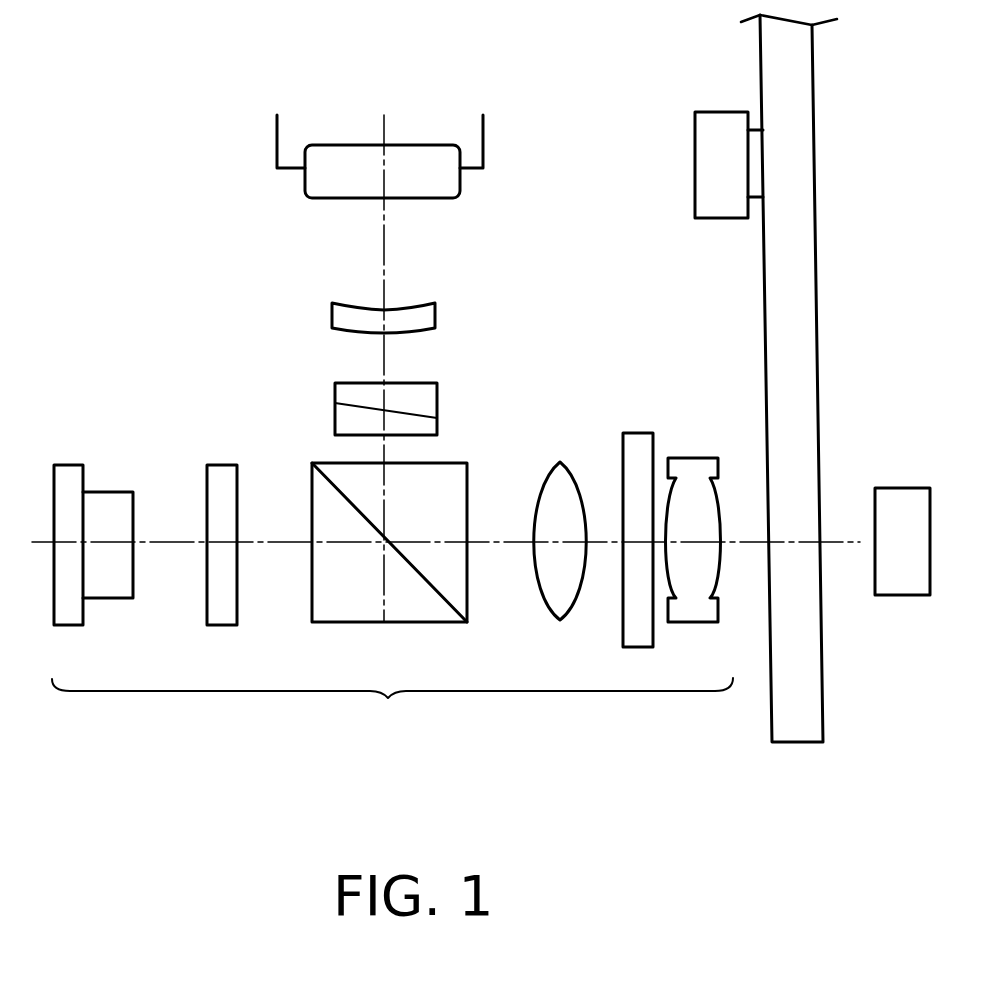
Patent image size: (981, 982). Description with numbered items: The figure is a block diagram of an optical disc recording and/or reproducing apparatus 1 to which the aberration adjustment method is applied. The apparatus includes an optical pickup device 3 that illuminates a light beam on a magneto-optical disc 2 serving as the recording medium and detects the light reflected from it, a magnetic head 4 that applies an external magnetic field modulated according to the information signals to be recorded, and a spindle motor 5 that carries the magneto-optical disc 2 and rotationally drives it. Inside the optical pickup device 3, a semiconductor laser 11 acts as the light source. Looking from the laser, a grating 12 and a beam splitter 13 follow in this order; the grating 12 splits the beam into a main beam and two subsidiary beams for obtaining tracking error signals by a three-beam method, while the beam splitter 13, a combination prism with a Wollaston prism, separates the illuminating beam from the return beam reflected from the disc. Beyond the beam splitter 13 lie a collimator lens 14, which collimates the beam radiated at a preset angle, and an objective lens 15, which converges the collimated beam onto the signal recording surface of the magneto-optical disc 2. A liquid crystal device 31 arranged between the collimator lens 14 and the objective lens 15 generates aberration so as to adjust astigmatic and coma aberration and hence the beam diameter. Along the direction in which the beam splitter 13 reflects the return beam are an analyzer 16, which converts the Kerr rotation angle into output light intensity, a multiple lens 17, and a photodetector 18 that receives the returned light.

The optical disc recording and/or reproducing apparatus 1 is at (80, 280).
The magneto-optical disc 2 is at (820, 318).
The optical pickup device 3 is at (392, 711).
The magnetic head 4 is at (903, 488).
The spindle motor 5 is at (722, 112).
The semiconductor laser 11 is at (111, 492).
The grating 12 is at (221, 465).
The beam splitter 13 is at (430, 462).
The collimator lens 14 is at (560, 462).
The objective lens 15 is at (697, 458).
The analyzer 16 is at (335, 397).
The multiple lens 17 is at (332, 308).
The photodetector 18 is at (334, 145).
The liquid crystal device 31 is at (636, 433).